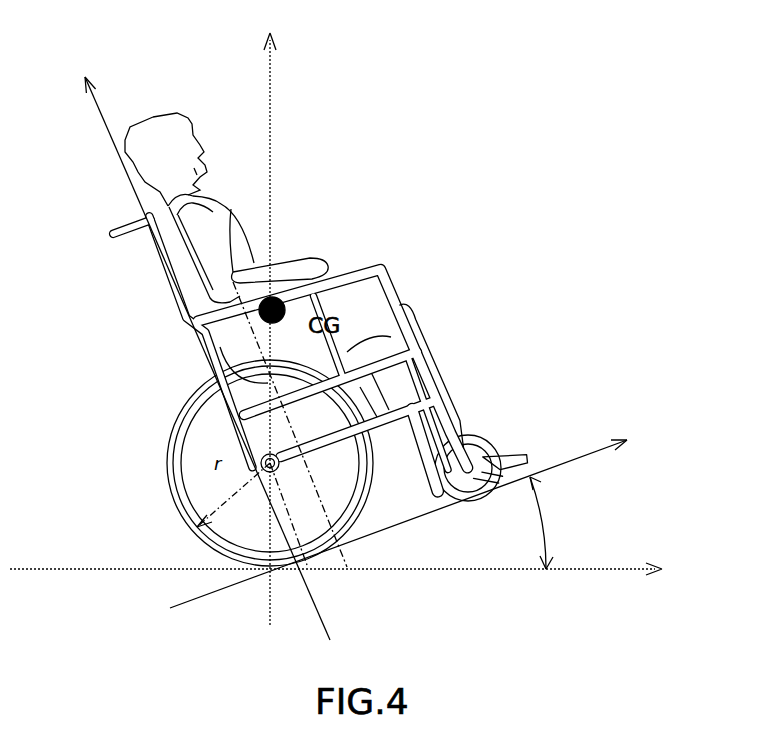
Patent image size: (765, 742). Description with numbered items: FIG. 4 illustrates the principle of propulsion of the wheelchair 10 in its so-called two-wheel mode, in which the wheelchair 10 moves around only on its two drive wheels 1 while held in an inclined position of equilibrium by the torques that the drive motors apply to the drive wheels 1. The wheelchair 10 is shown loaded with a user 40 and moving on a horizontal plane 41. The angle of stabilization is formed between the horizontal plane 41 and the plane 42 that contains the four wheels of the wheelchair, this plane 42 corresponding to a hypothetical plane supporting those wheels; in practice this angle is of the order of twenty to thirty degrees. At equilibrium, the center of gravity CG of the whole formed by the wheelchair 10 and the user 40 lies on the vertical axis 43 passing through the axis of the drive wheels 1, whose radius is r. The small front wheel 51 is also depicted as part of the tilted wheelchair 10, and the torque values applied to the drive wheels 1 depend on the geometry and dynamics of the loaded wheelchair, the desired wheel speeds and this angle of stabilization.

The drive wheels 1 is at (168, 455).
The wheelchair 10 is at (88, 222).
The user 40 is at (162, 113).
The horizontal plane 41 is at (635, 571).
The plane containing the four wheels 42 is at (601, 450).
The vertical axis 43 is at (273, 163).
The caster wheel 51 is at (478, 433).